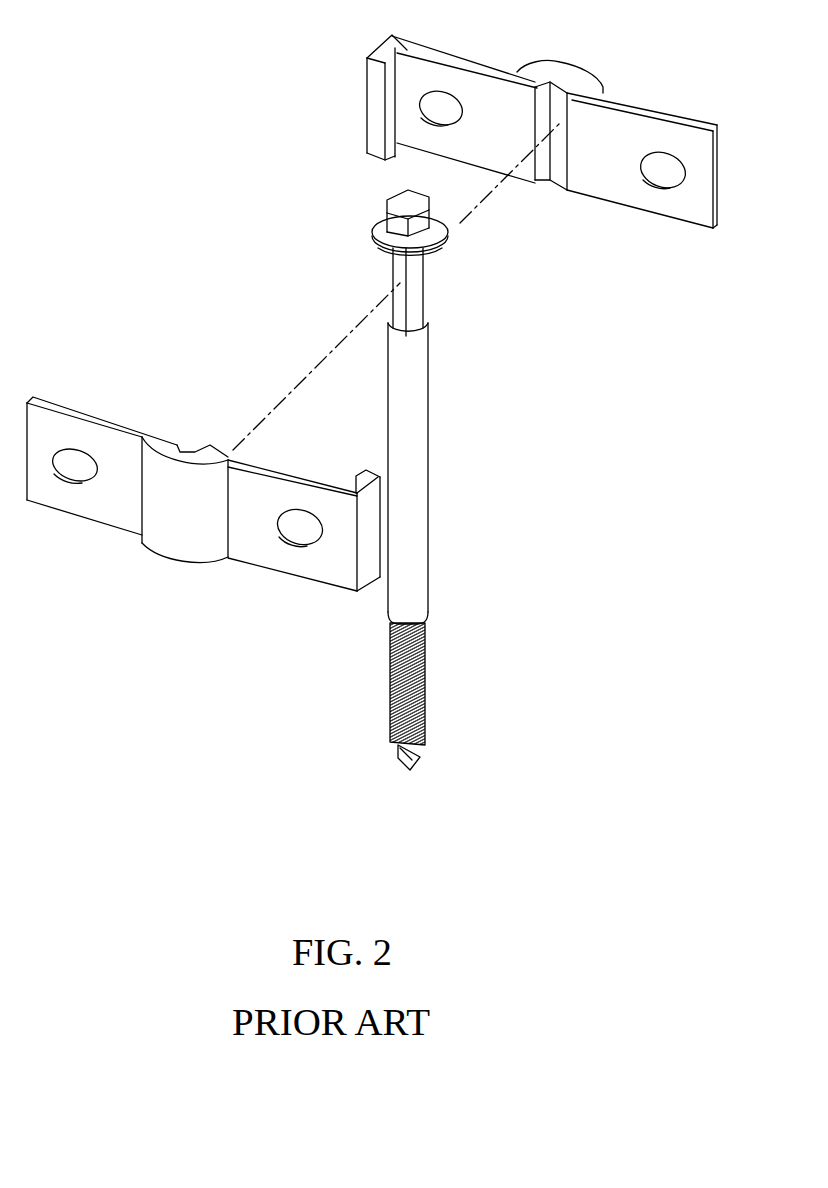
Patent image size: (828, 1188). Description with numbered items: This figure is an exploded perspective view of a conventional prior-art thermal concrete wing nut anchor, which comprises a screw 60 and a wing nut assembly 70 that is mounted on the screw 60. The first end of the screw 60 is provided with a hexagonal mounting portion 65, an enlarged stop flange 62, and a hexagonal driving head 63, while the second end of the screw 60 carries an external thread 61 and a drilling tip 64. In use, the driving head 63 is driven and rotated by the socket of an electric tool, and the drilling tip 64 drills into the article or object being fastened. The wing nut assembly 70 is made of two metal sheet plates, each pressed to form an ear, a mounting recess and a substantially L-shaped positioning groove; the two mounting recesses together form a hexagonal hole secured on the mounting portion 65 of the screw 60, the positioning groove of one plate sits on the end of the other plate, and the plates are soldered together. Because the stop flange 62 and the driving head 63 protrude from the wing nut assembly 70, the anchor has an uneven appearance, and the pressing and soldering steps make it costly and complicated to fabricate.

The screw 60 is at (425, 413).
The external thread 61 is at (423, 661).
The enlarged stop flange 62 is at (378, 232).
The hexagonal driving head 63 is at (400, 204).
The drilling tip 64 is at (400, 753).
The hexagonal mounting portion 65 is at (415, 298).
The wing nut assembly 70 is at (117, 257).